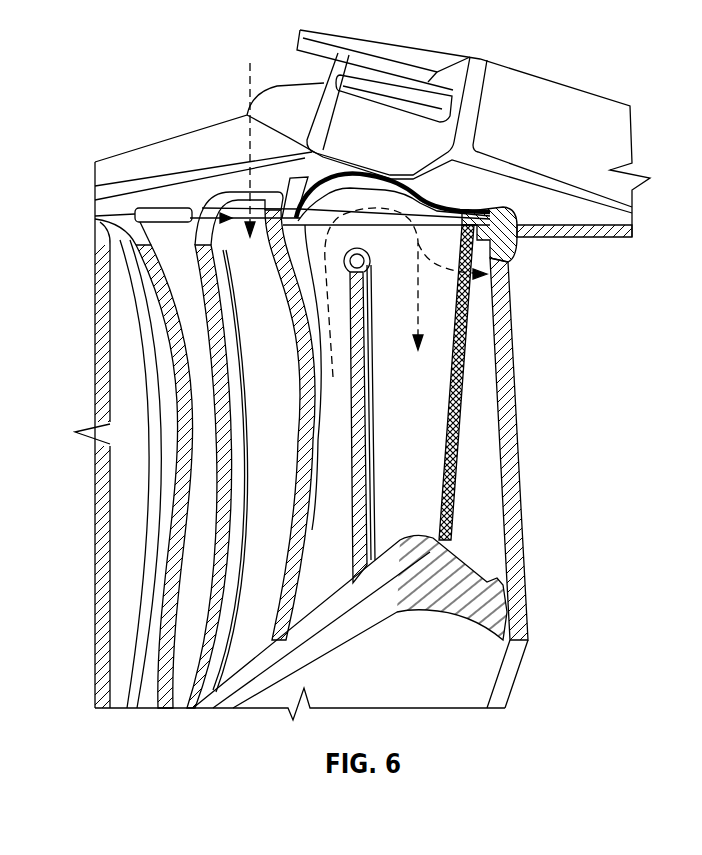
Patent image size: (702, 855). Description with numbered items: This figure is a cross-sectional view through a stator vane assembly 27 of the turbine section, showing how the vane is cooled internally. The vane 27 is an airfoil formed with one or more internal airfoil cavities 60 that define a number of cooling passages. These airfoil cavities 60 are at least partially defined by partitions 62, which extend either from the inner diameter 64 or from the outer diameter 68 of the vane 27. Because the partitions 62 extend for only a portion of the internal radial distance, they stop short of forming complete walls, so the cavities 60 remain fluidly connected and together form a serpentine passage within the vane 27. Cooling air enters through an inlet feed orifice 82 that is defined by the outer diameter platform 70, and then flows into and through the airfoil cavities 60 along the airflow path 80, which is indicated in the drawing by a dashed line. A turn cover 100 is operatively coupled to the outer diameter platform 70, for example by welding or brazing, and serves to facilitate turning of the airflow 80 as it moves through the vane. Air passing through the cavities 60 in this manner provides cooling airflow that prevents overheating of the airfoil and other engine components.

The stator vane assembly 27 is at (523, 673).
The airfoil cavities 60 is at (262, 565).
The partitions 62 is at (362, 430).
The inner diameter 64 is at (512, 596).
The outer diameter 68 is at (508, 261).
The outer diameter platform 70 is at (553, 207).
The airflow path 80 is at (248, 103).
The inlet feed orifice 82 is at (187, 224).
The turn cover 100 is at (450, 206).